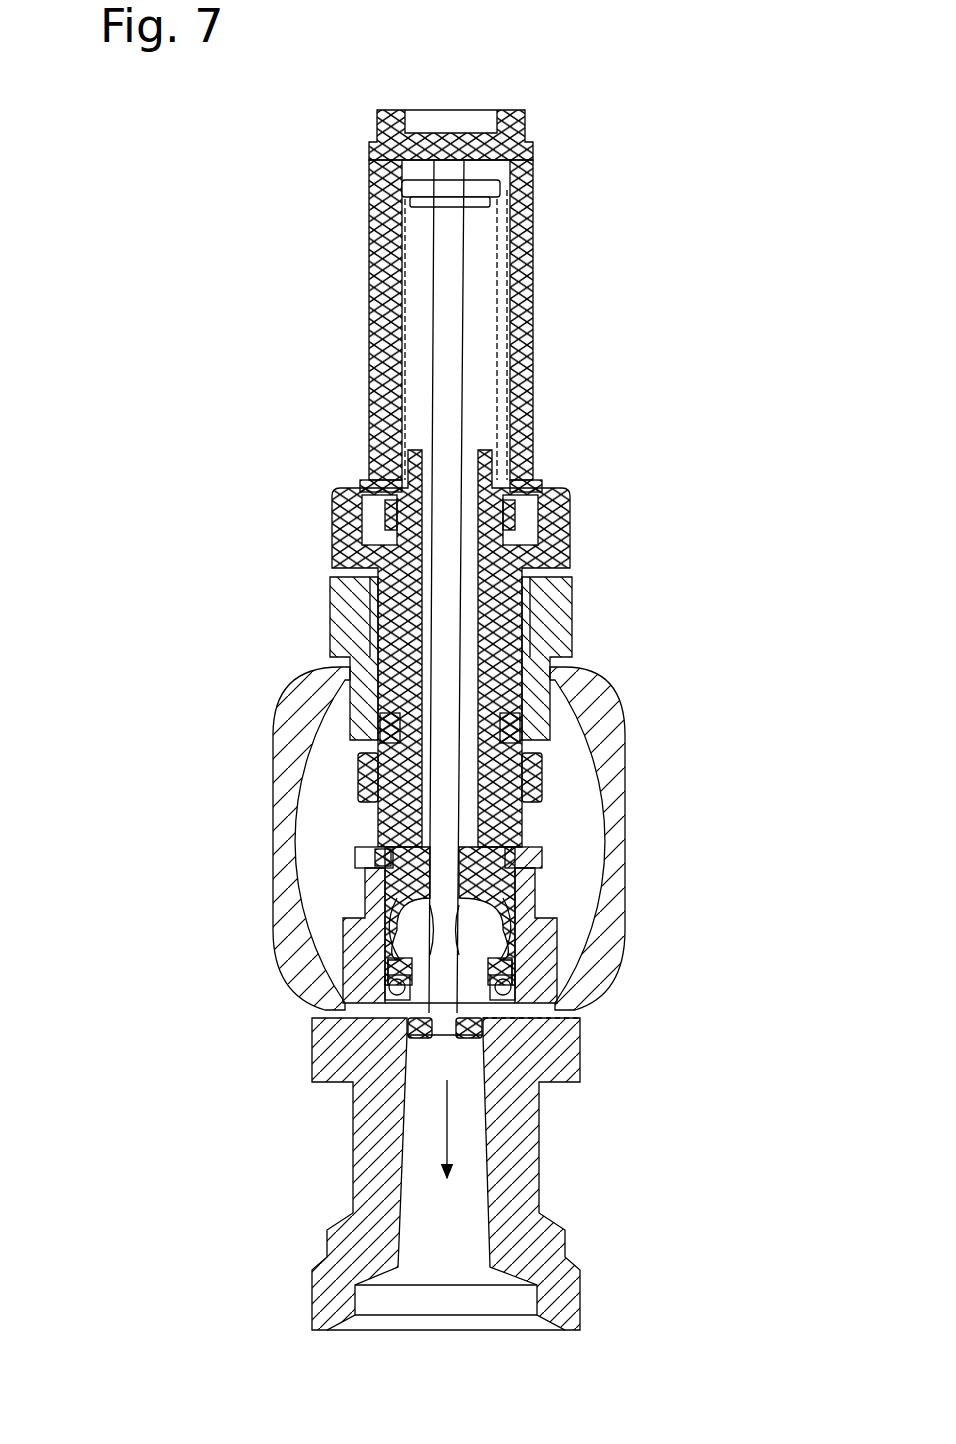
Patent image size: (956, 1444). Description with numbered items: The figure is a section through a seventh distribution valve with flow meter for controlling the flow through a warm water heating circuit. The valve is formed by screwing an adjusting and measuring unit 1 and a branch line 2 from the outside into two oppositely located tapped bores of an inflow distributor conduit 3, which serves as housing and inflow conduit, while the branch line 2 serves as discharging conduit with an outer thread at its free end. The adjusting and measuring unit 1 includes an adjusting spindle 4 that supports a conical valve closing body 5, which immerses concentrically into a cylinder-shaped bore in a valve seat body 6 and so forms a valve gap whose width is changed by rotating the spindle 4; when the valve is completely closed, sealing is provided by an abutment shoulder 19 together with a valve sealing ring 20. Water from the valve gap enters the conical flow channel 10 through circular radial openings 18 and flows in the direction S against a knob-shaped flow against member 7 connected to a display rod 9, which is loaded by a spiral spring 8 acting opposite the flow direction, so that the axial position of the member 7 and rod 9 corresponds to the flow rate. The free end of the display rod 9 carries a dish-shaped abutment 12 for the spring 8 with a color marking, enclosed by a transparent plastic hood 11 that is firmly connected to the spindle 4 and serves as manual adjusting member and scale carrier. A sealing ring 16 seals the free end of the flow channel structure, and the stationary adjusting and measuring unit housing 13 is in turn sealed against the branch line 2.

The adjusting and measuring unit 1 is at (268, 552).
The branch line 2 is at (375, 1157).
The inflow distributor conduit 3 is at (590, 713).
The adjusting spindle 4 is at (530, 609).
The valve closing body 5 is at (500, 904).
The valve seat body 6 is at (536, 880).
The flow against member 7 is at (480, 1030).
The spiral spring 8 is at (398, 304).
The display rod 9 is at (455, 283).
The flow channel 10 is at (478, 1245).
The transparent plastic hood 11 is at (520, 160).
The dish-shaped abutment 12 is at (455, 185).
The adjusting and measuring unit housing 13 is at (355, 618).
The sealing ring 16 is at (384, 986).
The radial openings 18 is at (392, 938).
The abutment shoulder 19 is at (538, 853).
The valve sealing ring 20 is at (372, 857).